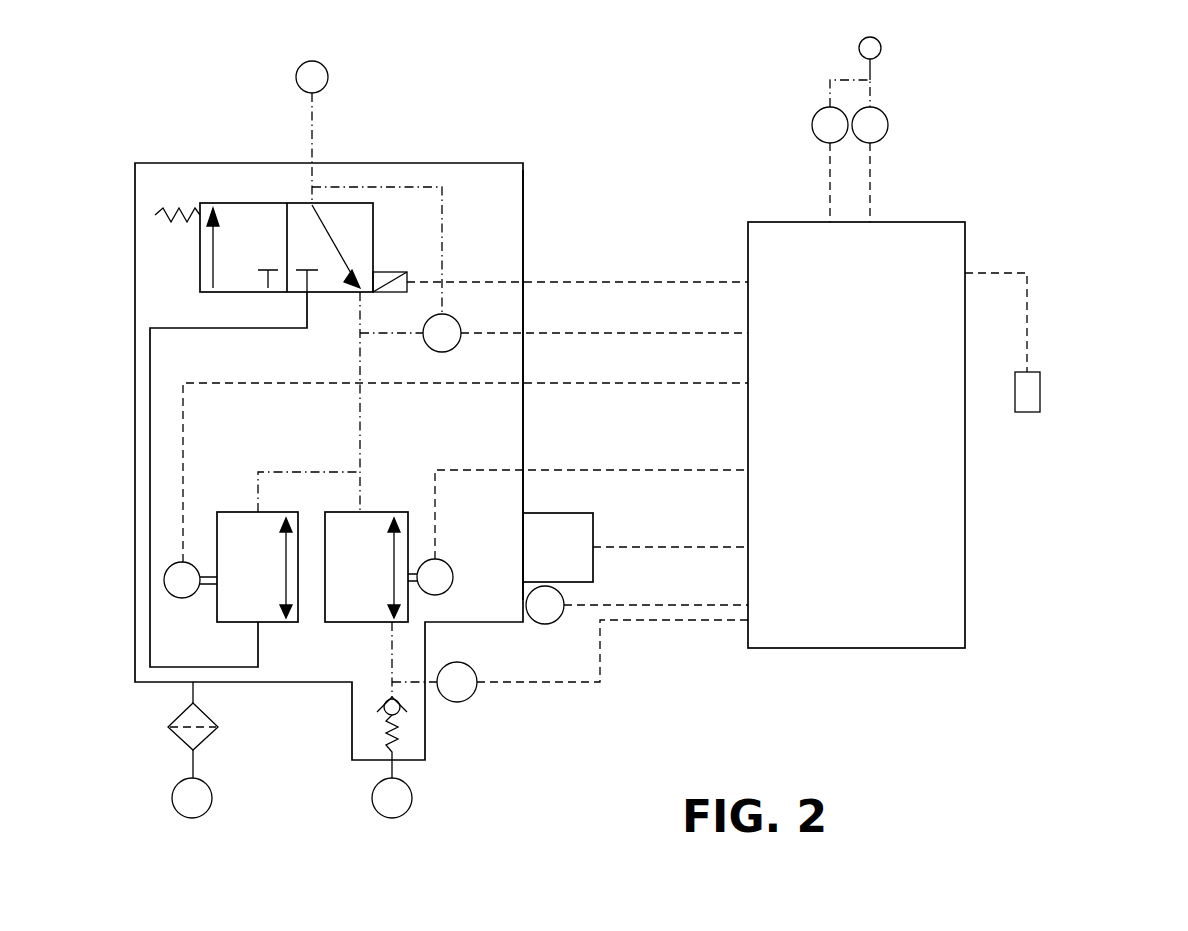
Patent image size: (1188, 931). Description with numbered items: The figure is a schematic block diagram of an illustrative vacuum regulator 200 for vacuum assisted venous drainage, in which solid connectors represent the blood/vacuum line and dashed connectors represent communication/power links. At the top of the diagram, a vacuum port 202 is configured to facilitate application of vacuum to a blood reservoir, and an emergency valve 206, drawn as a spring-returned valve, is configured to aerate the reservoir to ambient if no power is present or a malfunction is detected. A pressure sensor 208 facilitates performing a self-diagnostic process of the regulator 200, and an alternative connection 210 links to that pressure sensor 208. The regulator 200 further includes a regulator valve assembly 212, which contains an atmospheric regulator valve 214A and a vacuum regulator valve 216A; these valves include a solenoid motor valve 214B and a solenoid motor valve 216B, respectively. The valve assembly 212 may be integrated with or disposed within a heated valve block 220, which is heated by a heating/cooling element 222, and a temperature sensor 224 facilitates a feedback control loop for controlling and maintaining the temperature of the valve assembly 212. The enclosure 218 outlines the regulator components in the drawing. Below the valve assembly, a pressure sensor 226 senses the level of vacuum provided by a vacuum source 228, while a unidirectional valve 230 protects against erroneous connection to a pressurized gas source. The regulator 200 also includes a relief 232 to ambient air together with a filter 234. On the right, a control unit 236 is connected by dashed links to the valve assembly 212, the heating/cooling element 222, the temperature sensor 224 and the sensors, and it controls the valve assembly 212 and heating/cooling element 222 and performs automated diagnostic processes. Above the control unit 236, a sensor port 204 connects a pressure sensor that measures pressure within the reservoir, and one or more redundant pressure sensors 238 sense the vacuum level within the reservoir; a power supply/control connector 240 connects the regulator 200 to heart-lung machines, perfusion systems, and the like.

The vacuum regulator 200 is at (1125, 752).
The vacuum port 202 is at (328, 73).
The sensor port 204 is at (881, 47).
The emergency valve 206 is at (200, 243).
The pressure sensor 208 is at (455, 318).
The alternative connection 210 is at (443, 202).
The regulator valve assembly 212 is at (297, 644).
The atmospheric regulator valve 214A is at (237, 510).
The solenoid motor valve 214B is at (167, 600).
The vacuum regulator valve 216A is at (393, 510).
The solenoid motor valve 216B is at (450, 590).
The housing 218 is at (502, 148).
The heated valve block 220 is at (525, 185).
The heating/cooling element 222 is at (635, 547).
The temperature sensor 224 is at (558, 622).
The pressure sensor 226 is at (467, 697).
The vacuum source 228 is at (412, 795).
The unidirectional valve 230 is at (408, 728).
The relief 232 is at (212, 798).
The filter 234 is at (218, 727).
The control unit 236 is at (942, 222).
The redundant pressure sensors 238 is at (810, 127).
The power supply/control connector 240 is at (1040, 390).